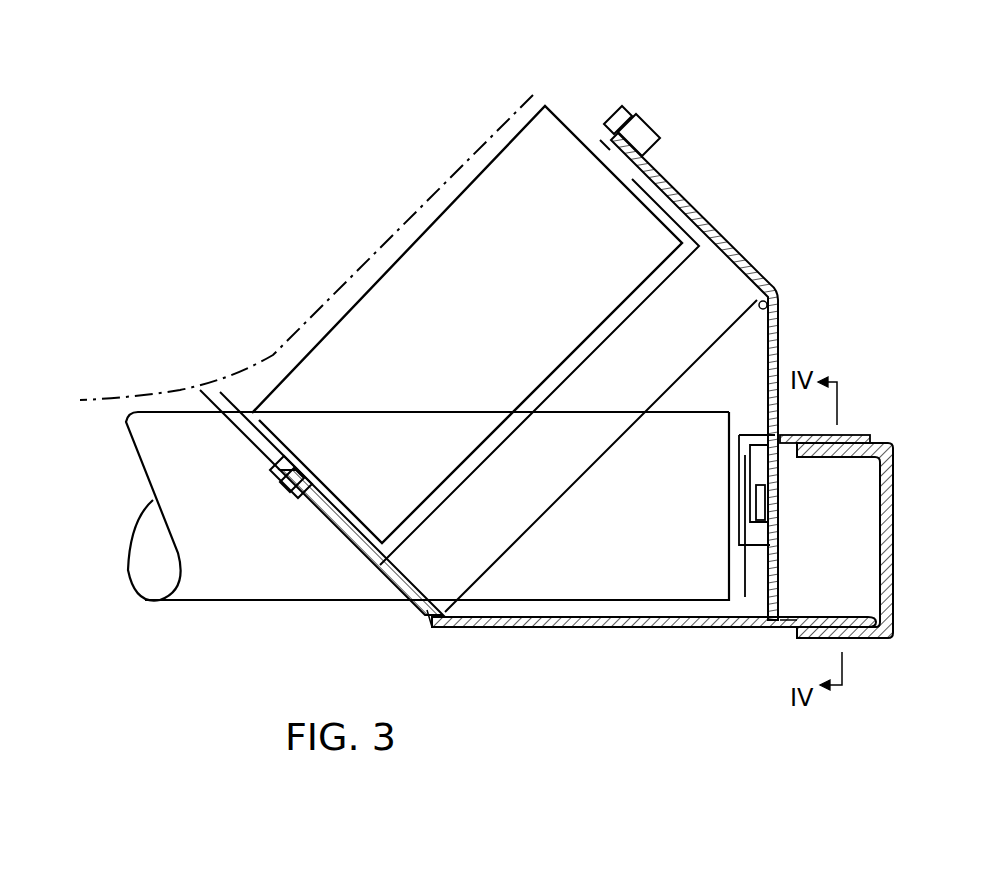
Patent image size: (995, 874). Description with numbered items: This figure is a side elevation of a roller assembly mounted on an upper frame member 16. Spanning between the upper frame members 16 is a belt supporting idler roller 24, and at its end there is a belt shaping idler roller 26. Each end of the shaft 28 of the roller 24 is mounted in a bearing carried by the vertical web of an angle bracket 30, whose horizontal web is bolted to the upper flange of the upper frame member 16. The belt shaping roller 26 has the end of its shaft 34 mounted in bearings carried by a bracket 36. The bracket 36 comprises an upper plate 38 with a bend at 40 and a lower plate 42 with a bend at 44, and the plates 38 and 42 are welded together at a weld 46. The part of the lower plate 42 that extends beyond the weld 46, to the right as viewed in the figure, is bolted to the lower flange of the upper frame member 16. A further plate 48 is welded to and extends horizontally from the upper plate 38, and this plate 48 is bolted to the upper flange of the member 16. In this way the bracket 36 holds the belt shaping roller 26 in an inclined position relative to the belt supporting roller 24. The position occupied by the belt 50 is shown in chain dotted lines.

The upper frame member 16 is at (893, 545).
The belt supporting idler roller 24 is at (345, 505).
The belt shaping idler roller 26 is at (422, 240).
The shaft 28 is at (765, 496).
The angle bracket 30 is at (755, 516).
The shaft 34 is at (655, 150).
The bracket 36 is at (567, 630).
The upper plate 38 is at (768, 362).
The bend 40 is at (775, 297).
The lower plate 42 is at (651, 642).
The bend 44 is at (428, 628).
The weld 46 is at (760, 628).
The plate 48 is at (826, 418).
The belt 50 is at (306, 325).